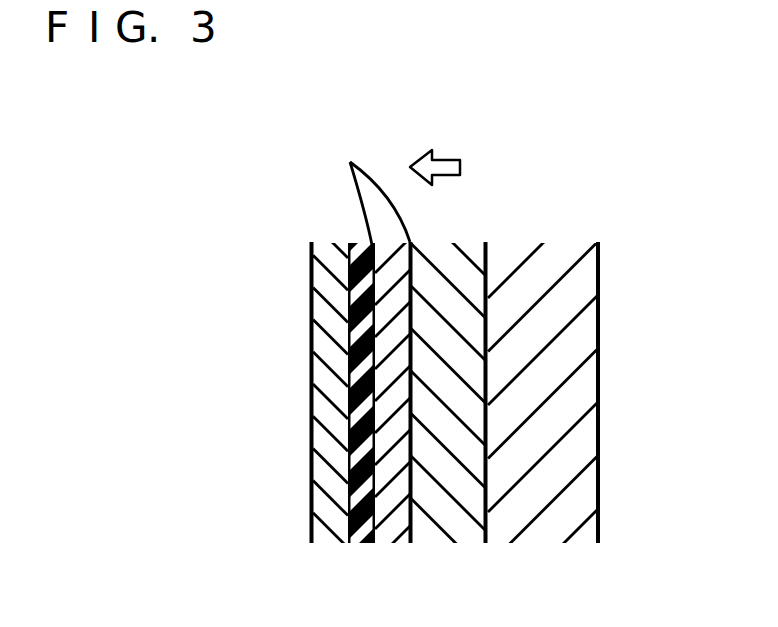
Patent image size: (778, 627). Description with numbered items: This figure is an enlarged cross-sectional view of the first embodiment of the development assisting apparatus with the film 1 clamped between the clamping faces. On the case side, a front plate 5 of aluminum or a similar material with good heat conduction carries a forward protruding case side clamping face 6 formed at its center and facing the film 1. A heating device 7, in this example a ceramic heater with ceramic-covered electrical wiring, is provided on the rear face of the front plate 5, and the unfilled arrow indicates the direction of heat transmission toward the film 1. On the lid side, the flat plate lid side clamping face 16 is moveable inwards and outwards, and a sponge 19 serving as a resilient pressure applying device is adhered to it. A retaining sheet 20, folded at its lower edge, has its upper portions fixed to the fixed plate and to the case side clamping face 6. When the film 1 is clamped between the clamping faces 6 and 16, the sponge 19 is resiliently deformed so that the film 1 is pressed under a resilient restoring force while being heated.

The film 1 is at (388, 508).
The front plate 5 is at (450, 262).
The case side clamping face 6 is at (410, 383).
The heating device 7 is at (573, 300).
The lid side clamping face 16 is at (347, 448).
The sponge 19 is at (348, 242).
The retaining sheet 20 is at (370, 178).